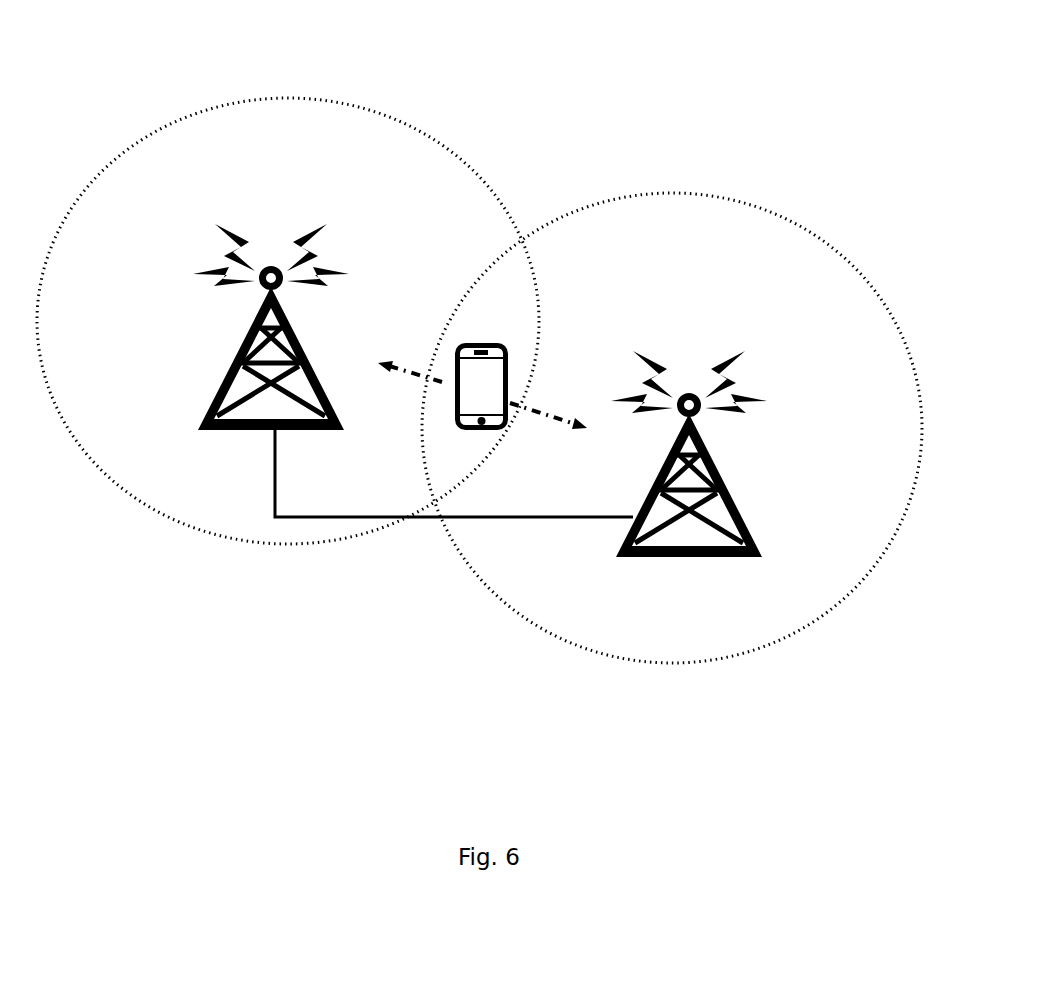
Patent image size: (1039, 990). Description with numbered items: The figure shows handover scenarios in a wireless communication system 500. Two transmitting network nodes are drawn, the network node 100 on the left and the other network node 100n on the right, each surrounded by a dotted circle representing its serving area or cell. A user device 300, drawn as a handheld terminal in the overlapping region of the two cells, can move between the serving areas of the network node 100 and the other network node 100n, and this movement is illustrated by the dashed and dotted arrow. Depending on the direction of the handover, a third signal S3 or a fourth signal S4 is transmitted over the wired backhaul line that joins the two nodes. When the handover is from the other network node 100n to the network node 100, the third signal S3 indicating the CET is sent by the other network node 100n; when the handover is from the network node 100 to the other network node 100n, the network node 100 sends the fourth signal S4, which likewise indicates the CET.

The wireless communication system 500 is at (151, 48).
The network node 100 is at (210, 402).
The other network node 100n is at (743, 517).
The user device 300 is at (480, 327).
The third signal S3 is at (454, 473).
The fourth signal S4 is at (411, 540).